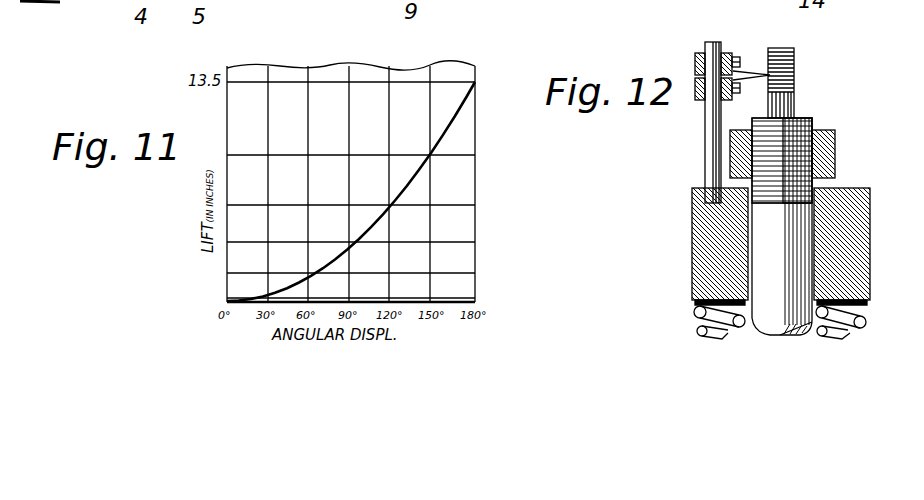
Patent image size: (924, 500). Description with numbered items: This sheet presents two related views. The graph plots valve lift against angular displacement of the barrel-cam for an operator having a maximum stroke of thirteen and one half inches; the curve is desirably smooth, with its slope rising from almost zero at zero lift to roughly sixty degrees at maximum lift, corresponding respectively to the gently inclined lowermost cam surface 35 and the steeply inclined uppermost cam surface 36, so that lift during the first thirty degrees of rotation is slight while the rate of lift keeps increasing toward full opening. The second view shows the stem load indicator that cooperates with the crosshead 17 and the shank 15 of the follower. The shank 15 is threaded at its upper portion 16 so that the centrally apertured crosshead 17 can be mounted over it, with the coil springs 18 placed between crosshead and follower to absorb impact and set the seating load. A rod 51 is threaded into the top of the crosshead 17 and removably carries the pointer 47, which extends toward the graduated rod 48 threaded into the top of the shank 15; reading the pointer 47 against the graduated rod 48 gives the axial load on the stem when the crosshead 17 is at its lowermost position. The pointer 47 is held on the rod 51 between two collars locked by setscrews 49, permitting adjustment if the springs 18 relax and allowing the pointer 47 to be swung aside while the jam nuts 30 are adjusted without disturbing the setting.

In FIG. 11, the lowermost surface of the cam track 35 is at (231, 299).
In FIG. 11, the uppermost surface of the cam track 36 is at (466, 101).
In FIG. 12, the rod 51 is at (708, 128).
In FIG. 12, the setscrews 49 is at (742, 56).
In FIG. 12, the pointer 47 is at (748, 72).
In FIG. 12, the graduated rod 48 is at (797, 84).
In FIG. 12, the threaded upper portion of the shank 16 is at (800, 118).
In FIG. 12, the jam nuts 30 is at (838, 140).
In FIG. 12, the crosshead 17 is at (851, 188).
In FIG. 12, the shank 15 is at (762, 232).
In FIG. 12, the coil springs 18 is at (694, 312).